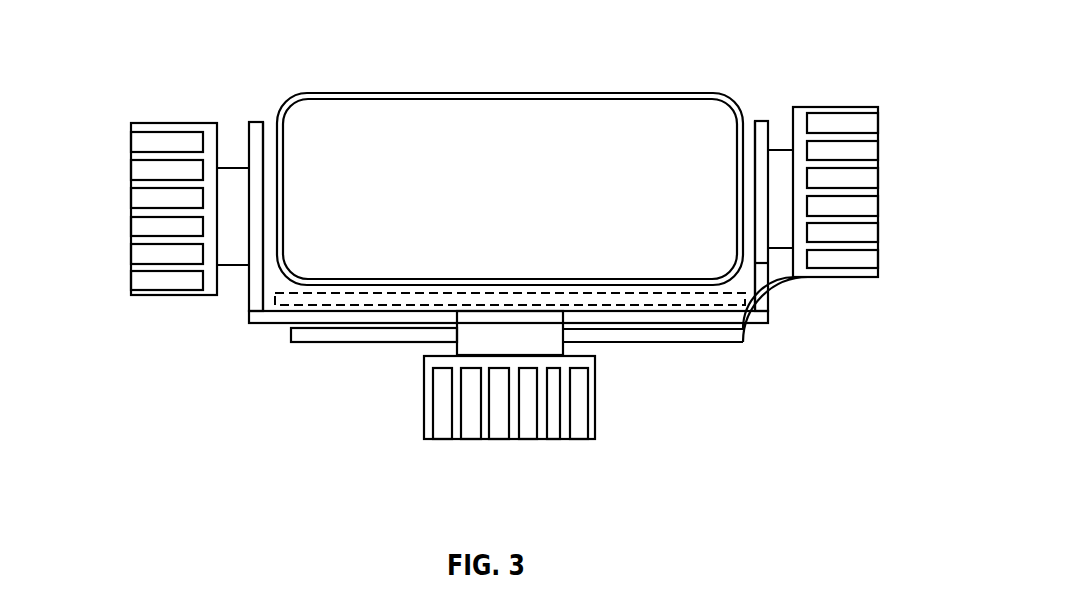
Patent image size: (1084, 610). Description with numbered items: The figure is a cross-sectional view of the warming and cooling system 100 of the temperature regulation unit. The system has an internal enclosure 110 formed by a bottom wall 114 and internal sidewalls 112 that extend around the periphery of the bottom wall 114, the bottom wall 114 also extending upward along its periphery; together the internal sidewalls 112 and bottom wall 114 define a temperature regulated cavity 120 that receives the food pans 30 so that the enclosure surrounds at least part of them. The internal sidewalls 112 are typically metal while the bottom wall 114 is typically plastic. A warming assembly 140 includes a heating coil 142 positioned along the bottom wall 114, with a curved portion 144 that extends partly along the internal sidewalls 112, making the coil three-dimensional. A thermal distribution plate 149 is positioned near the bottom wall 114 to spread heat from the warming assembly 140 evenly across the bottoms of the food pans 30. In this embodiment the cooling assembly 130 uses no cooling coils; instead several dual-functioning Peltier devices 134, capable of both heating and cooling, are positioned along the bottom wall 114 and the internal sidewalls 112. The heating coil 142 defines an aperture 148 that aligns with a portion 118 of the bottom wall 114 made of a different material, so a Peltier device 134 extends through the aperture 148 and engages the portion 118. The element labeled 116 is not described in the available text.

The warming and cooling system 100 is at (120, 67).
The food pans 30 is at (525, 203).
The internal enclosure 110 is at (247, 107).
The temperature regulated cavity 120 is at (757, 113).
The internal sidewalls 112 is at (257, 298).
The bottom wall 114 is at (278, 317).
The first heat conducting path 116 is at (450, 315).
The portion 118 is at (525, 318).
The cooling assembly 130 is at (165, 108).
The Peltier devices 134 is at (153, 273).
The warming assembly 140 is at (723, 357).
The heating coil 142 is at (693, 337).
The curved portion 144 is at (800, 303).
The aperture 148 is at (570, 333).
The thermal distribution plate 149 is at (348, 302).